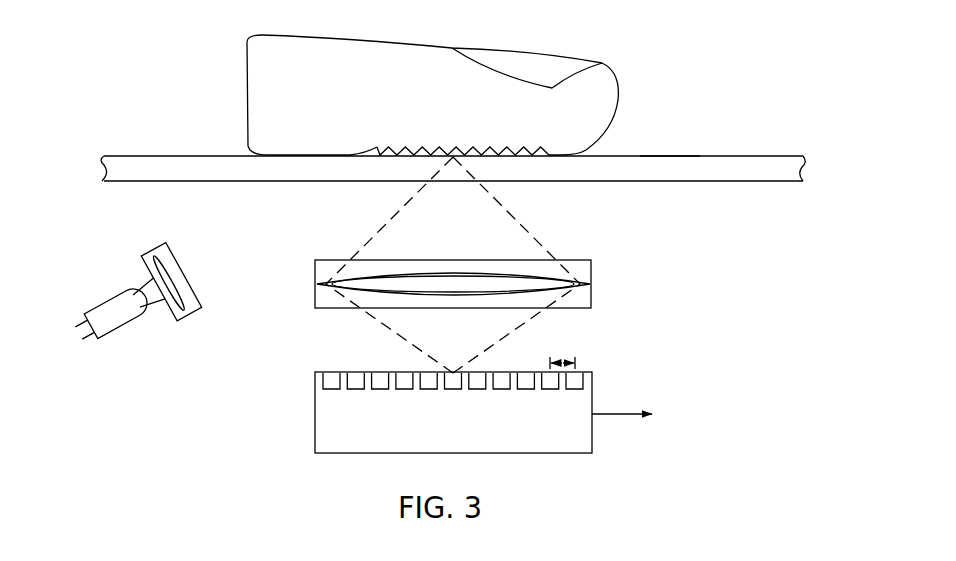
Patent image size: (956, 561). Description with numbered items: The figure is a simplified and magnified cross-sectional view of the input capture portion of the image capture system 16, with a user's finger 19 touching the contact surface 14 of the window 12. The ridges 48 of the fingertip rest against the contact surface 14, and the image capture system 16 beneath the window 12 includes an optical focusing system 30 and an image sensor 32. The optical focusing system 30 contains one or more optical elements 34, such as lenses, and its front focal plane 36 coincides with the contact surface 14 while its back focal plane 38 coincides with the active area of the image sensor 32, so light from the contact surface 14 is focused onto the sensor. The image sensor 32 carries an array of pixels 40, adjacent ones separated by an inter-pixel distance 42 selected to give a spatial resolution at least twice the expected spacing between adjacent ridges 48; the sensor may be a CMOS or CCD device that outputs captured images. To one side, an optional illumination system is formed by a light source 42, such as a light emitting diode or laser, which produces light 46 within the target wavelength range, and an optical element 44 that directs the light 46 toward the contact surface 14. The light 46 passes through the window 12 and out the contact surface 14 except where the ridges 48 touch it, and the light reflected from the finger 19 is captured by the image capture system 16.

The window 12 is at (101, 162).
The contact surface 14 is at (665, 155).
The image capture system 16 is at (684, 323).
The finger 19 is at (392, 40).
The optical focusing system 30 is at (615, 281).
The image sensor 32 is at (315, 412).
The optical element 34 is at (322, 284).
The front focal plane 36 is at (453, 160).
The back focal plane 38 is at (453, 371).
The pixels 40 is at (586, 380).
The inter-pixel distance 42 is at (563, 358).
The optical element 44 is at (190, 313).
The light 46 is at (140, 286).
The ridges 48 is at (372, 162).